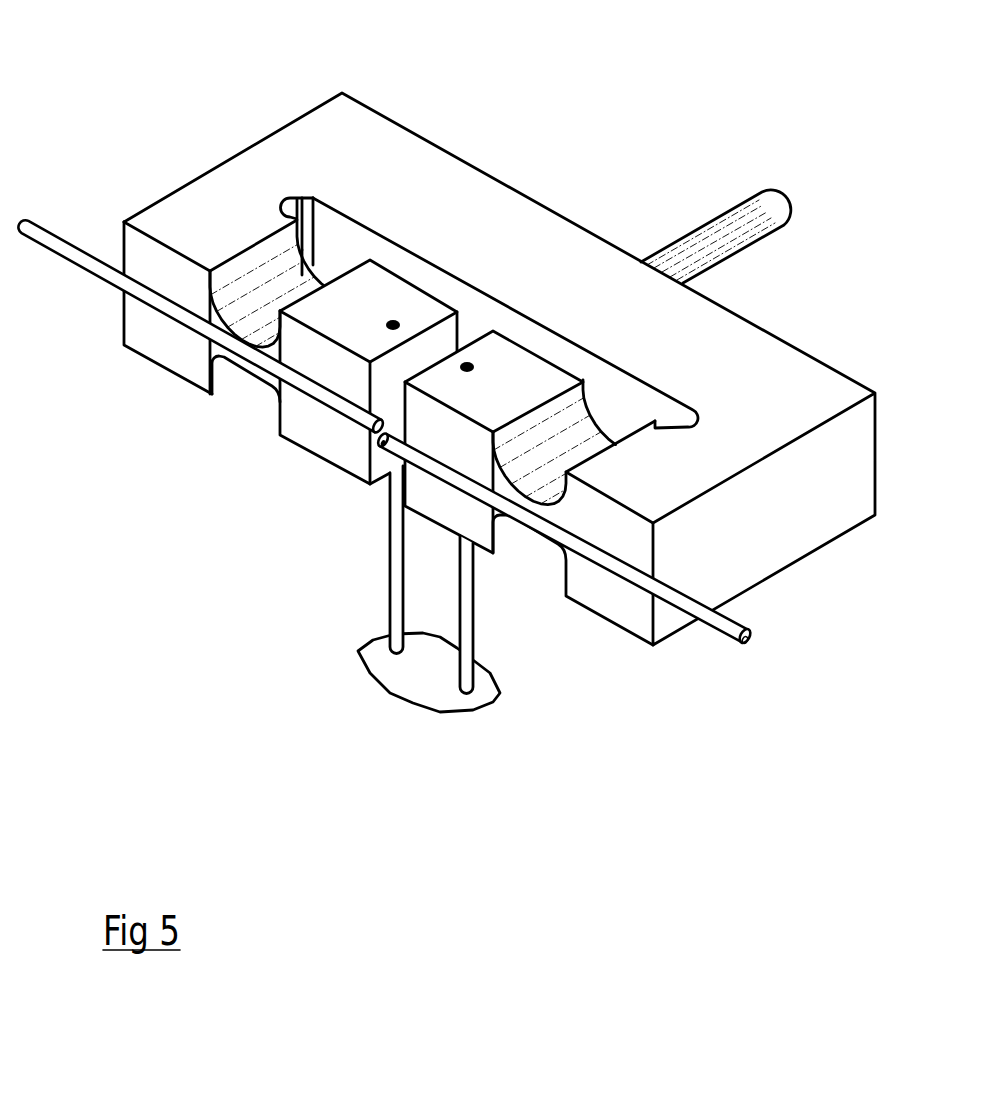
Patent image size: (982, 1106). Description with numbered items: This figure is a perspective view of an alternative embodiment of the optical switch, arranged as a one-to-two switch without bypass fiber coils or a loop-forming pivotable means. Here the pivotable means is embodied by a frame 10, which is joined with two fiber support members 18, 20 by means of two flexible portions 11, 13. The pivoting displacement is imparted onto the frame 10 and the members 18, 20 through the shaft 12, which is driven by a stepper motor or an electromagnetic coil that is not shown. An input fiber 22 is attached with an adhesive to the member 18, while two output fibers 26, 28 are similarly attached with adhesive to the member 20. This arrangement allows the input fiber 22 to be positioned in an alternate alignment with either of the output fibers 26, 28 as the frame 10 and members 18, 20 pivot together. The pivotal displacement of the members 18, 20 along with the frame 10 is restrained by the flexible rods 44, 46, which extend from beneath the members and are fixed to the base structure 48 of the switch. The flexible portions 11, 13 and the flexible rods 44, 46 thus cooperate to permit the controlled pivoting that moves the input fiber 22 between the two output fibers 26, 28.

The frame 10 is at (295, 132).
The flexible portion 11 is at (263, 328).
The shaft 12 is at (704, 218).
The flexible portion 13 is at (538, 493).
The fiber support member 18 is at (322, 437).
The fiber support member 20 is at (470, 522).
The input fiber 22 is at (62, 257).
The output fiber 26 is at (732, 615).
The output fiber 28 is at (712, 636).
The flexible rod 44 is at (390, 573).
The flexible rod 46 is at (463, 628).
The base structure 48 is at (392, 692).